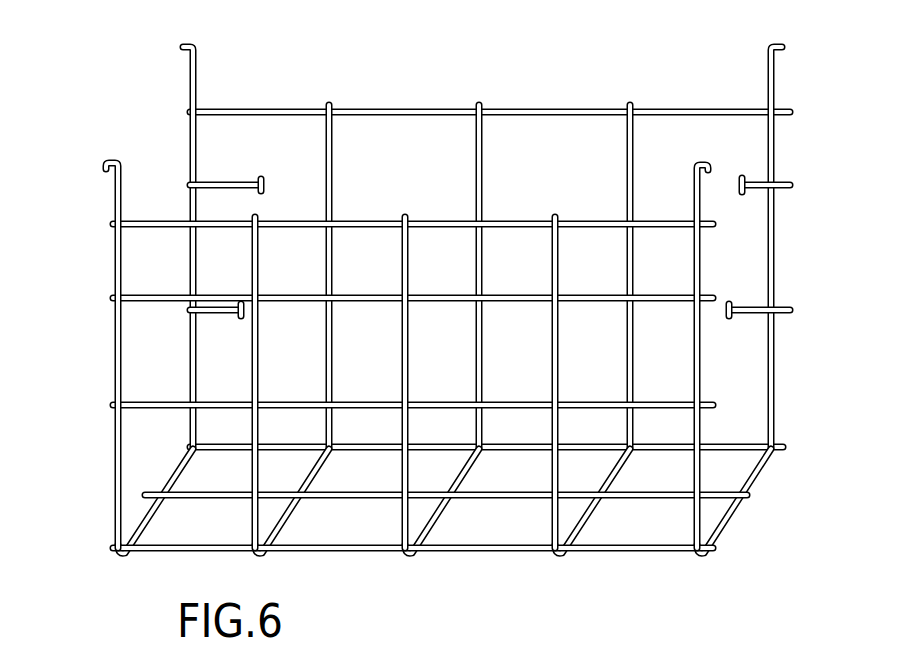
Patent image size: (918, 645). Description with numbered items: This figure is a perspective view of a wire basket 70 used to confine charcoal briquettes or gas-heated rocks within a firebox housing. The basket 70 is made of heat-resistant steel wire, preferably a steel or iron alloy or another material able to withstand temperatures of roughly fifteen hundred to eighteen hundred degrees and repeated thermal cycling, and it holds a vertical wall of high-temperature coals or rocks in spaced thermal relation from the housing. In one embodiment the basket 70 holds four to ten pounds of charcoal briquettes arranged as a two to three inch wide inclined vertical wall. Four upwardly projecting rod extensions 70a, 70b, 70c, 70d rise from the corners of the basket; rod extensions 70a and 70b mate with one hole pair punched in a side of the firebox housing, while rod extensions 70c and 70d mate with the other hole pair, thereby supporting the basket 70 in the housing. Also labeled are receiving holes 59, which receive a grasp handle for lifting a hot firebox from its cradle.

The wire basket 70 is at (434, 298).
The rod extension 70a is at (105, 164).
The rod extension 70b is at (182, 47).
The rod extension 70c is at (708, 168).
The rod extension 70d is at (783, 50).
The receiving holes 59 is at (630, 644).